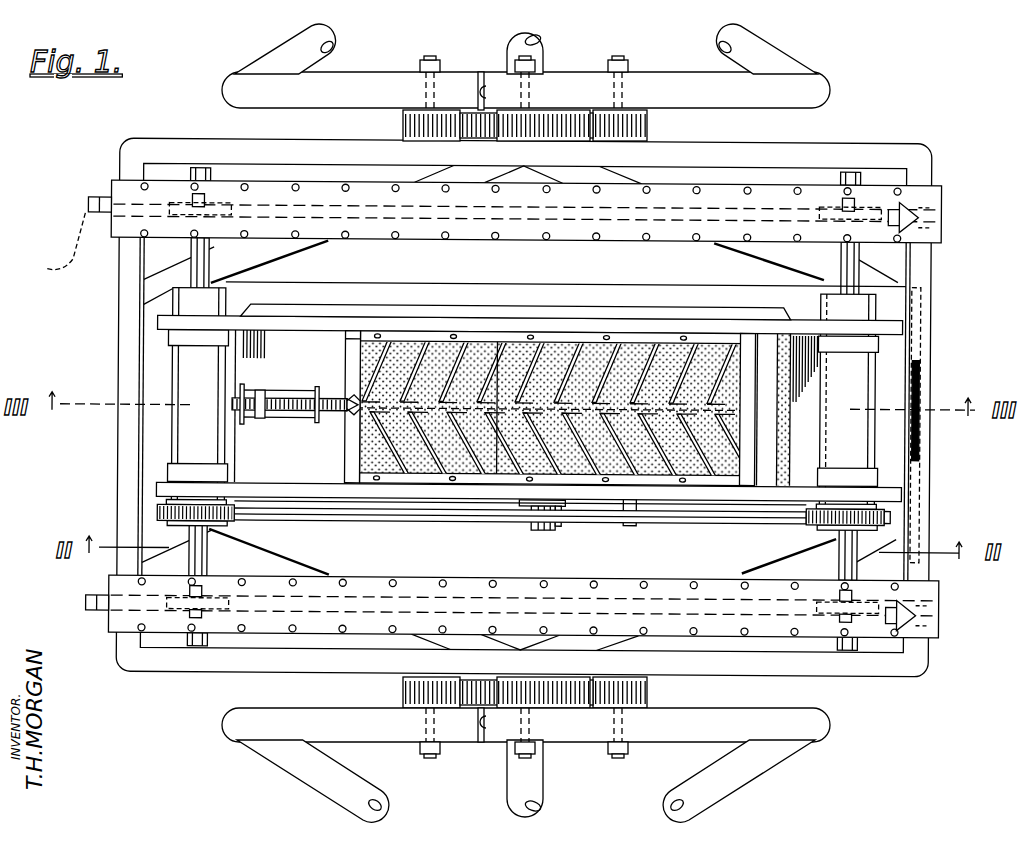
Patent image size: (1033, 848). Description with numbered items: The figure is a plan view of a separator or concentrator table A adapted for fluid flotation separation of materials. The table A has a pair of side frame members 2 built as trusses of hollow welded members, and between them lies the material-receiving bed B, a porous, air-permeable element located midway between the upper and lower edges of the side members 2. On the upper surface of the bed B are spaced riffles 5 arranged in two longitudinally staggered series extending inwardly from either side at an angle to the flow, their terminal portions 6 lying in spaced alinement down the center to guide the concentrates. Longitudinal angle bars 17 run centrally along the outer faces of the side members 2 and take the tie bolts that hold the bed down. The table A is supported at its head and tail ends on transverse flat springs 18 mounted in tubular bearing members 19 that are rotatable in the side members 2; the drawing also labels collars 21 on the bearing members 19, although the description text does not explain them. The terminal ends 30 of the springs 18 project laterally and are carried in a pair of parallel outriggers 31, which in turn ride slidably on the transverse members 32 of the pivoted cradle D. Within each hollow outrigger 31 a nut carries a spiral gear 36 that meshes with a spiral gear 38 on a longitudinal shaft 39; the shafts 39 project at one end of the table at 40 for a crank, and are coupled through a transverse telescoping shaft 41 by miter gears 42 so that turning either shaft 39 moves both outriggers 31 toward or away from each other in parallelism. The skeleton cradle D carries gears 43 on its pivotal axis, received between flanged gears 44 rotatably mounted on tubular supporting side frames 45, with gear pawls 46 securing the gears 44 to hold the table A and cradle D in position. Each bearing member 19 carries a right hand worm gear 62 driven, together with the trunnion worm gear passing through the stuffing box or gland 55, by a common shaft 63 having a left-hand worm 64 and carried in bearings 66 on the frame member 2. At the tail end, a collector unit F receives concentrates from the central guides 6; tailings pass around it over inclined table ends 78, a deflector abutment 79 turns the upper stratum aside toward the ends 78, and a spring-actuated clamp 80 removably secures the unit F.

The side frame members 2 is at (168, 321).
The riffles 5 is at (560, 342).
The terminal portions 6 is at (432, 340).
The longitudinal angle bars 17 is at (708, 306).
The transverse flat springs 18 is at (190, 262).
The tubular bearing members 19 is at (192, 299).
The roller collar 21 is at (182, 348).
The terminal ends 30 is at (190, 178).
The outriggers 31 is at (118, 186).
The transverse members 32 is at (143, 443).
The spiral gear 36 is at (215, 206).
The spiral gear 38 is at (222, 242).
The shafts 39 is at (372, 222).
The projecting shaft end 40 is at (87, 207).
The transverse telescoping shaft 41 is at (925, 346).
The miter gears 42 is at (920, 214).
The gears 43 is at (565, 118).
The flanged gears 44 is at (403, 124).
The tubular supporting side frames 45 is at (526, 423).
The gear pawls 46 is at (480, 82).
The stuffing box or gland 55 is at (565, 510).
The right hand worm gear 62 is at (158, 511).
The common shaft 63 is at (340, 523).
The left-hand worm 64 is at (545, 531).
The bearings 66 is at (632, 526).
The inclined table ends 78 is at (525, 408).
The deflector abutment 79 is at (352, 400).
The spring-actuated clamp 80 is at (262, 392).
The separator or concentrator table A is at (319, 344).
The material-receiving element or bed B is at (605, 340).
The pivoted cradle D is at (767, 665).
The collector unit or device F is at (300, 414).